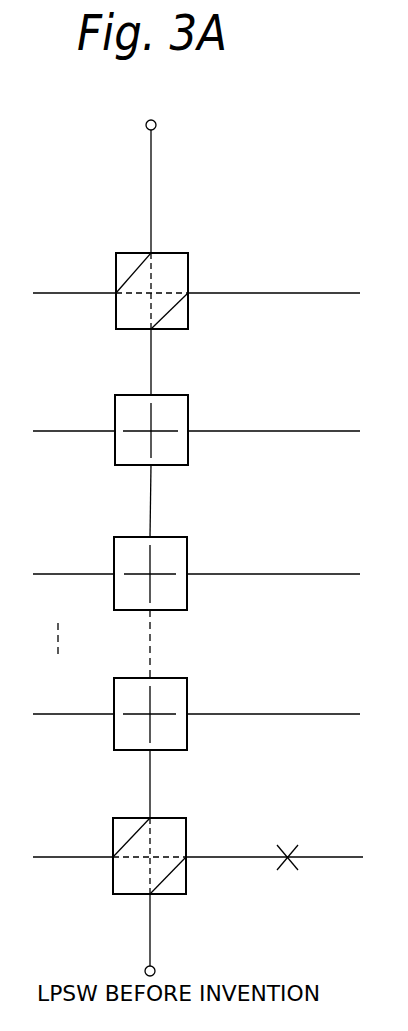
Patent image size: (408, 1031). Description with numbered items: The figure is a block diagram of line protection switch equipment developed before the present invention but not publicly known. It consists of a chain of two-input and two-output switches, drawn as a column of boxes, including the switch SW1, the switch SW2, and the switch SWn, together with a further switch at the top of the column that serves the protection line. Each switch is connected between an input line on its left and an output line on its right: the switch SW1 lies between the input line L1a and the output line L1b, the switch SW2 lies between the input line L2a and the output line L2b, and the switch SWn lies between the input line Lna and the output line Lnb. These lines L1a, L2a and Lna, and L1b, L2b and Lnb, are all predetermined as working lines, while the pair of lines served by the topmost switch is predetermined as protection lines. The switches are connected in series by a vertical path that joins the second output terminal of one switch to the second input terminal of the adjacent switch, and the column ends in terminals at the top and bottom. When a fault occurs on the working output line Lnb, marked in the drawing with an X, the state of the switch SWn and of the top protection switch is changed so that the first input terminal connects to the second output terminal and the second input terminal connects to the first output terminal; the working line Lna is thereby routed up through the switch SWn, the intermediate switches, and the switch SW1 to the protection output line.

The two-input and two-output switch SW1 is at (163, 395).
The two-input and two-output switch SW2 is at (165, 537).
The two-input and two-output switch SWn is at (165, 818).
The input line L1a is at (71, 419).
The output line L1b is at (243, 431).
The input line L2a is at (73, 561).
The output line L2b is at (243, 574).
The input line Lna is at (69, 844).
The output line Lnb is at (243, 857).